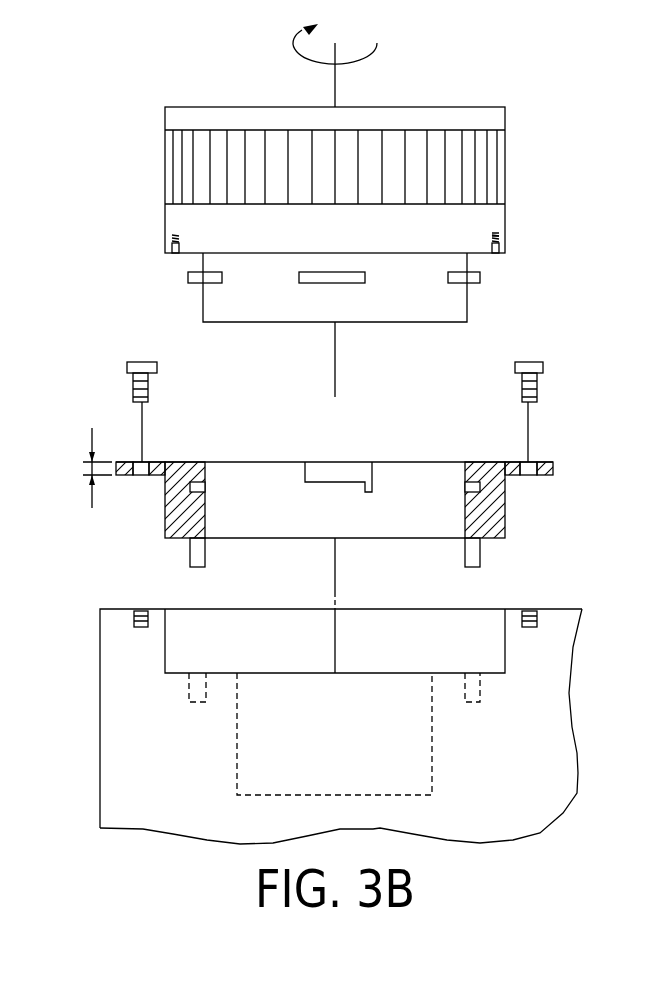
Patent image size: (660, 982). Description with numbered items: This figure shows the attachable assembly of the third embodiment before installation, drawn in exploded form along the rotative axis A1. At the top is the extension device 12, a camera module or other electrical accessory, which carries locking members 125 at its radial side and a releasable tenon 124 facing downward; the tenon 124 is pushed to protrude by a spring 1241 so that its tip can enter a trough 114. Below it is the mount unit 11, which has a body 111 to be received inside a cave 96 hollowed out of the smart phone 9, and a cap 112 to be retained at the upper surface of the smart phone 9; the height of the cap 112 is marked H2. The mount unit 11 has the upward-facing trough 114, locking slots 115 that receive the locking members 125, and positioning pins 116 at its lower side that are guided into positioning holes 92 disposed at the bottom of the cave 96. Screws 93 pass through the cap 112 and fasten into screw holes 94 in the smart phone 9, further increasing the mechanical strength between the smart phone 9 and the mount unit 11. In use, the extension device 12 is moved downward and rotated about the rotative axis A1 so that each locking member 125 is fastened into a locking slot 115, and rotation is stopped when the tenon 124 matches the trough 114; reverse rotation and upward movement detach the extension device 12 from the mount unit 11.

The rotative axis A1 is at (337, 87).
The extension device 12 is at (545, 172).
The releasable tenon 124 is at (497, 253).
The spring 1241 is at (503, 236).
The locking member 125 is at (480, 277).
The screw 93 is at (535, 380).
The mount unit 11 is at (373, 474).
The cap 112 is at (553, 463).
The body 111 is at (296, 466).
The trough 114 is at (495, 465).
The locking slot 115 is at (455, 484).
The positioning pin 116 is at (478, 552).
The flange height H2 is at (82, 468).
The smart phone 9 is at (369, 705).
The cave 96 is at (214, 633).
The screw hole 94 is at (537, 619).
The positioning hole 92 is at (478, 687).